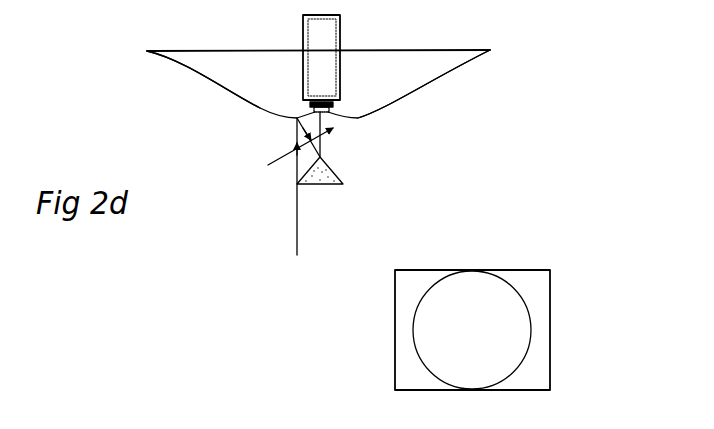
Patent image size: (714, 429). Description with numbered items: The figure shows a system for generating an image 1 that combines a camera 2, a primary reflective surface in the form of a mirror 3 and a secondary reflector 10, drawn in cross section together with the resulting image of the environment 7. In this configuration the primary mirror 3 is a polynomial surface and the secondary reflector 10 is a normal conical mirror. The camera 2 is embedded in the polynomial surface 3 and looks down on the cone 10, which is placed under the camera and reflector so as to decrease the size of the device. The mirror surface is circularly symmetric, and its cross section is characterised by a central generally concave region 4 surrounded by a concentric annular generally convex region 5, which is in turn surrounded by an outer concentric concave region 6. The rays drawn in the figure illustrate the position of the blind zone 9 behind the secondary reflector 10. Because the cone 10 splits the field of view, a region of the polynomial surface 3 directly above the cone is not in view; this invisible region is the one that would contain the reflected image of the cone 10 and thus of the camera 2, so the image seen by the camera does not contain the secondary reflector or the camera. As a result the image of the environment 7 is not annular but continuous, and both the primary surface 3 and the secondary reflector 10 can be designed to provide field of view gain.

The system for generating an image 1 is at (190, 245).
The camera 2 is at (341, 36).
The primary mirror 3 is at (423, 57).
The central generally concave region 4 is at (268, 165).
The concentric annular general convex region 5 is at (365, 117).
The outer concentric concave region 6 is at (183, 70).
The image of the environment 7 is at (452, 340).
The blind zone 9 is at (340, 229).
The secondary reflector 10 is at (330, 173).